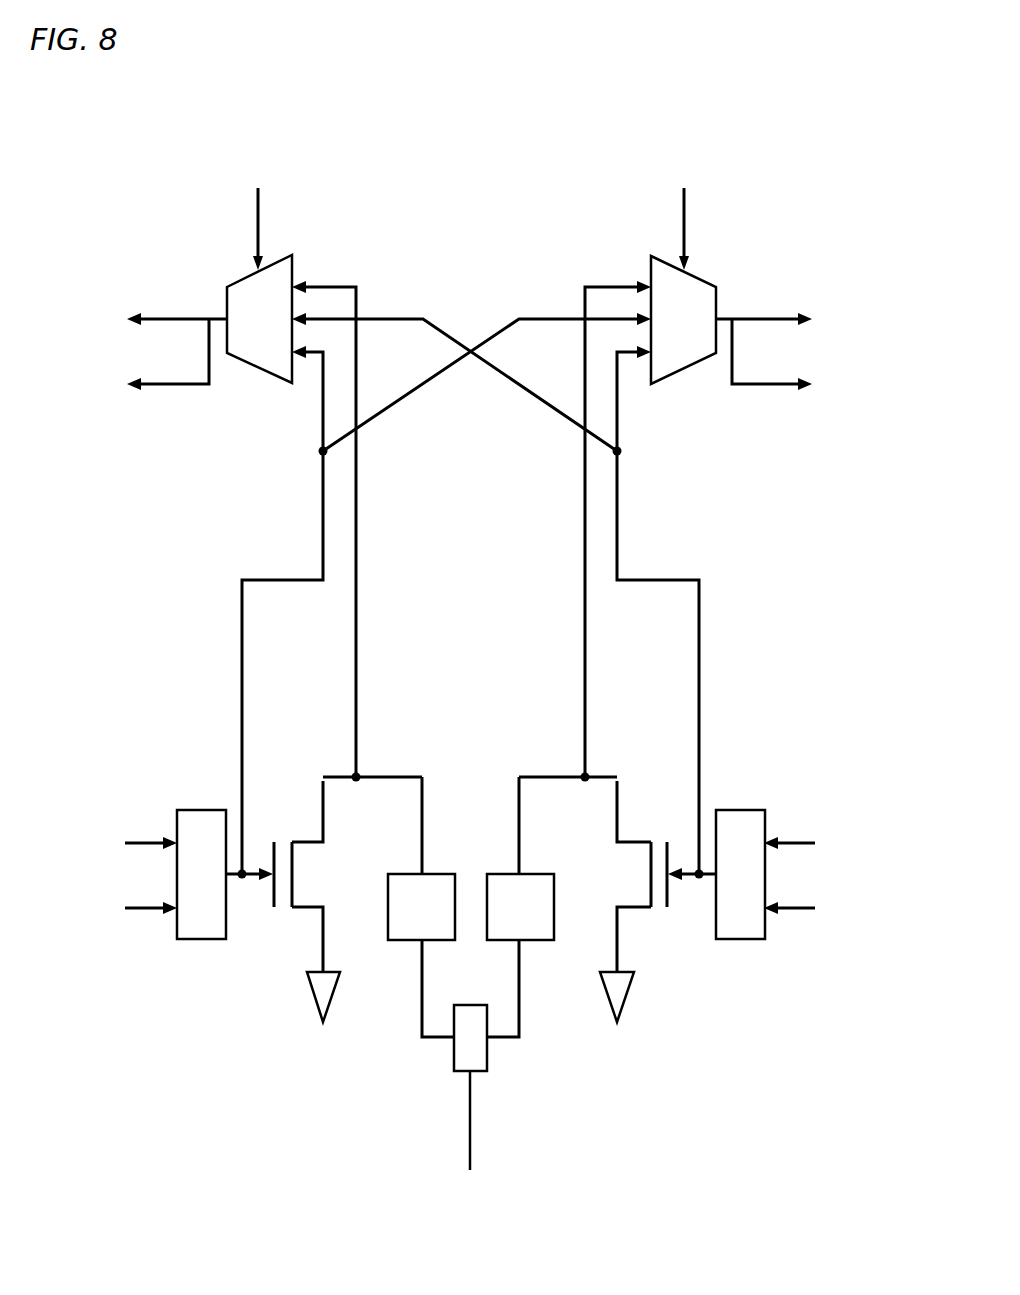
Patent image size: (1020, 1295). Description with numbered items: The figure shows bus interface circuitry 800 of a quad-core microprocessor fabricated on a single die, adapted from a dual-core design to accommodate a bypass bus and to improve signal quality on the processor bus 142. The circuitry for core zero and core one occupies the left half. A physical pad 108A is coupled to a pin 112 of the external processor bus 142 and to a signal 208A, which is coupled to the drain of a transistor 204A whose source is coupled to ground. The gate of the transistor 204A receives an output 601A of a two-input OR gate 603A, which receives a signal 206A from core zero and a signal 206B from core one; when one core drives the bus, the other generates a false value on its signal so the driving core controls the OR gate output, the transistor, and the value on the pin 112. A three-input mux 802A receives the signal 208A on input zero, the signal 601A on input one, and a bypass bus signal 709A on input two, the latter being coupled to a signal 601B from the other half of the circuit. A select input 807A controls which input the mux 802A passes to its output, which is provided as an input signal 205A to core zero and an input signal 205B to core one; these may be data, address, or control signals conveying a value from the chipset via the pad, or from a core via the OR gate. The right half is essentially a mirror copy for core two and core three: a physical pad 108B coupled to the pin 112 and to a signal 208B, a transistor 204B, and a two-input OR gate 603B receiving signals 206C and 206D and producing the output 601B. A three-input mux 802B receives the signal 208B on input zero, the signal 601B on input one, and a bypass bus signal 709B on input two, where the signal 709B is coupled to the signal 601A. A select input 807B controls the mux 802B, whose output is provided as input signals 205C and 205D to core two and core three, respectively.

The bus interface circuitry 800 is at (790, 65).
The select input 807A is at (258, 240).
The select input 807B is at (684, 240).
The 3-input mux 802A is at (259, 319).
The 3-input mux 802B is at (683, 320).
The input signal 205A is at (164, 319).
The input signal 205B is at (164, 384).
The input signal 205C is at (778, 319).
The input signal 205D is at (778, 384).
The bypass bus signal 709A is at (390, 319).
The bypass bus signal 709B is at (550, 319).
The signal 208A is at (356, 548).
The signal 208B is at (585, 548).
The output of OR gate 601A is at (242, 735).
The output of OR gate 601B is at (699, 735).
The signal from core 0 206A is at (157, 841).
The signal from core 1 206B is at (157, 912).
The signal from core 2 206C is at (785, 841).
The signal from core 3 206D is at (785, 912).
The two-input OR gate 603A is at (225, 874).
The two-input OR gate 603B is at (716, 874).
The transistor 204A is at (308, 901).
The transistor 204B is at (632, 901).
The physical pad 108A is at (421, 907).
The physical pad 108B is at (520, 907).
The pin 112 is at (470, 1038).
The external processor bus 142 is at (470, 1118).